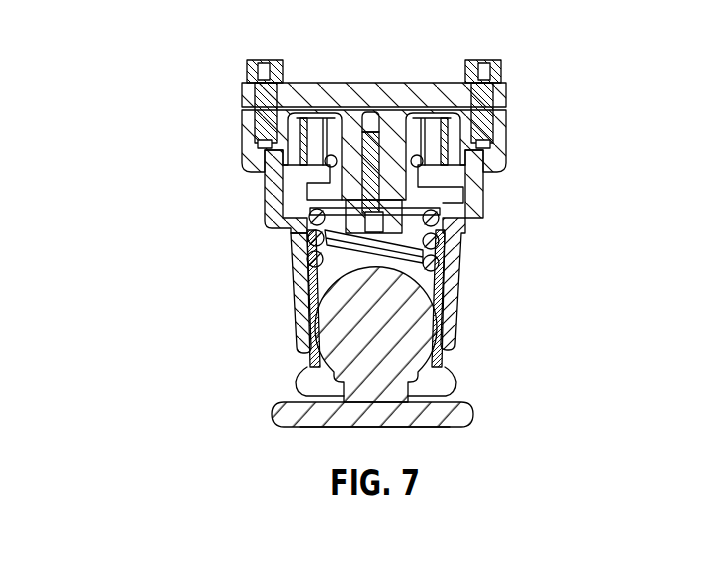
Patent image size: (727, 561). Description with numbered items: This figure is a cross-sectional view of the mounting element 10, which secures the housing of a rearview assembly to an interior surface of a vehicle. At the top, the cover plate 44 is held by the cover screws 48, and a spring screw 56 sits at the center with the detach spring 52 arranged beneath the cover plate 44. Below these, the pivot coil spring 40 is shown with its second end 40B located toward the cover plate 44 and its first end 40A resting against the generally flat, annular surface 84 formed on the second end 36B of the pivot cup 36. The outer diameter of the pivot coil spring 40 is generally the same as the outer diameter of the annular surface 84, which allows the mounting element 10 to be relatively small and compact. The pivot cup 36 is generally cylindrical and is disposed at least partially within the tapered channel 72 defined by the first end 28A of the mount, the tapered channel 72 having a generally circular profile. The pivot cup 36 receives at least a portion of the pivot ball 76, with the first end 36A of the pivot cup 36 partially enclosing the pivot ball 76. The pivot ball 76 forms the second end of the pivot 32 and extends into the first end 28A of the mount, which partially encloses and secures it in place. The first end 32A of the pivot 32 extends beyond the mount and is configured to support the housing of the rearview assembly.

The mounting element 10 is at (158, 90).
The cover plate 44 is at (386, 83).
The cover screw 48 is at (250, 60).
The spring screw 56 is at (363, 122).
The detach spring 52 is at (485, 186).
The generally flat, annular surface 84 is at (483, 223).
The pivot coil spring 40 is at (257, 251).
The second end of pivot coil spring 40B is at (280, 193).
The first end of pivot coil spring 40A is at (290, 288).
The pivot cup 36 is at (362, 292).
The second end of pivot cup 36B is at (458, 262).
The first end of pivot cup 36A is at (440, 384).
The tapered channel 72 is at (306, 345).
The pivot ball 76 is at (340, 323).
The first end of mount 28A is at (292, 385).
The pivot 32 is at (420, 419).
The first end of pivot 32A is at (458, 430).